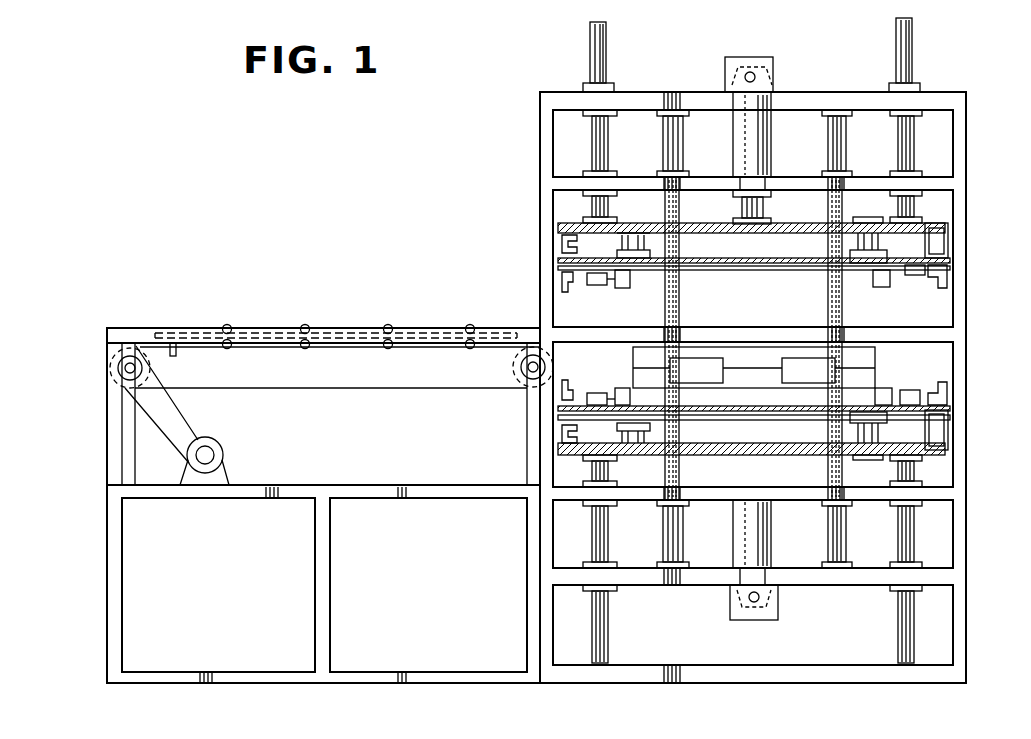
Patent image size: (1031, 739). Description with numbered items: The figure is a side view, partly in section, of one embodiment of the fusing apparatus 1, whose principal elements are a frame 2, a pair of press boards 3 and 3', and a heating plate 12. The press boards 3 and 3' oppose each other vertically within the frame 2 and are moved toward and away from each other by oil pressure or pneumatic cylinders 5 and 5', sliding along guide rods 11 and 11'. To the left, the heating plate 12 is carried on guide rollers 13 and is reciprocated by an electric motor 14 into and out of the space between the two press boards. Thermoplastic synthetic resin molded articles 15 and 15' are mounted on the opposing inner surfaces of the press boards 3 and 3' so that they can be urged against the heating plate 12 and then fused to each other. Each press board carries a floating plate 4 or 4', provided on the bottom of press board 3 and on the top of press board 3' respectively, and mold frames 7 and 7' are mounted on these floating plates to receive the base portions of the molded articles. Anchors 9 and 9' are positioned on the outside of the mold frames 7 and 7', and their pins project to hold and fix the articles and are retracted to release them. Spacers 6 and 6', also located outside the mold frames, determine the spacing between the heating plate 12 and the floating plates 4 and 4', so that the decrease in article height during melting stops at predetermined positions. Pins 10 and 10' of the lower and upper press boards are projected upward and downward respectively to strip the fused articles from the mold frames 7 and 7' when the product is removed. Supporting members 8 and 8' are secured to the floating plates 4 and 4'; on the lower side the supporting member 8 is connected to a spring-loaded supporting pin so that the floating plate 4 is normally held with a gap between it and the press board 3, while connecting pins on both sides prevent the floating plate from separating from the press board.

The molding apparatus 1 is at (536, 224).
The frame 2 is at (966, 144).
The press board 3 is at (779, 438).
The press board 3' is at (782, 238).
The floating plate 4 is at (779, 421).
The floating plate 4' is at (754, 276).
The oil pressure cylinder 5 is at (768, 560).
The oil pressure cylinder 5' is at (764, 140).
The spacer 6 is at (964, 389).
The spacer 6' is at (967, 294).
The mold frame 7 is at (889, 376).
The mold frame 7' is at (900, 294).
The supporting member 8 is at (925, 453).
The supporting member 8' is at (928, 223).
The anchor 9 is at (914, 378).
The anchor 9' is at (956, 271).
The pin 10 is at (774, 525).
The pin 10' is at (774, 305).
The guide rod 11 is at (759, 386).
The guide rod 11' is at (758, 55).
The heating plate 12 is at (275, 332).
The guide roller 13 is at (388, 324).
The electric motor 14 is at (222, 445).
The molded article 15 is at (599, 376).
The molded article 15' is at (751, 340).